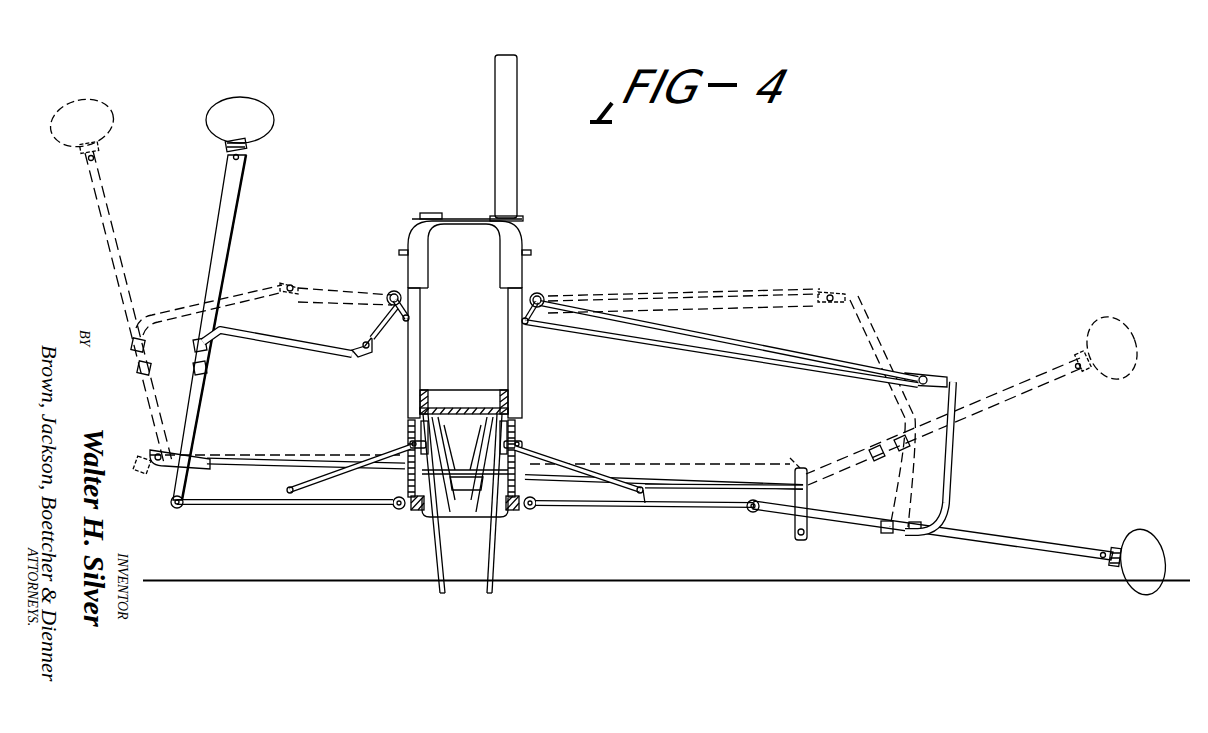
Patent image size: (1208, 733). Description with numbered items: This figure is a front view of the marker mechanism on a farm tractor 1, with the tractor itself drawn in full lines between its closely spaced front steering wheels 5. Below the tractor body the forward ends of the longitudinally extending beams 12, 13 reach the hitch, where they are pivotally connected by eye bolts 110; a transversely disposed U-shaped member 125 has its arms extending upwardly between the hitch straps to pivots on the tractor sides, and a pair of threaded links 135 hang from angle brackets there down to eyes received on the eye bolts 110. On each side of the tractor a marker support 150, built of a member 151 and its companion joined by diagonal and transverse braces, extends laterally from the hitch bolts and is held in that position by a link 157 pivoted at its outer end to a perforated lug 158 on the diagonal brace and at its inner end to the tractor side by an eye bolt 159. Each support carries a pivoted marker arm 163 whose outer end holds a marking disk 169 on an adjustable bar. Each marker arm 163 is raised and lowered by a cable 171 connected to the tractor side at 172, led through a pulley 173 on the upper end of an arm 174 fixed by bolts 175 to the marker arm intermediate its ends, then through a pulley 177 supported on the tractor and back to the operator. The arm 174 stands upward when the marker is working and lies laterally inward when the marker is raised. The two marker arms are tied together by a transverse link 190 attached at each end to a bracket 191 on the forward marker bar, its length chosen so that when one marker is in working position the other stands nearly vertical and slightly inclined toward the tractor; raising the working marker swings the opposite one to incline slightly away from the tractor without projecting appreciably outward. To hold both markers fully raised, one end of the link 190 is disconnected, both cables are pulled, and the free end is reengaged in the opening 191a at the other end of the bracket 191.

The tractor 1 is at (452, 221).
The front steering wheels 5 is at (487, 587).
The beam 12 is at (418, 514).
The beam 13 is at (508, 514).
The eye bolt 110 is at (396, 508).
The U-shaped member 125 is at (467, 518).
The link 135 is at (408, 422).
The marker support 150 is at (305, 512).
The member 151 is at (342, 470).
The link 157 is at (332, 468).
The perforated lug 158 is at (287, 489).
The eye bolt 159 is at (409, 444).
The marker arm 163 is at (196, 406).
The marking disk 169 is at (90, 103).
The cable 171 is at (372, 324).
The cable connection 172 is at (410, 320).
The pulley 173 is at (291, 285).
The arm 174 is at (300, 348).
The bolts 175 is at (196, 350).
The pulley 177 is at (392, 291).
The transverse link 190 is at (708, 482).
The bracket 191 is at (150, 455).
The opening 191a is at (140, 474).